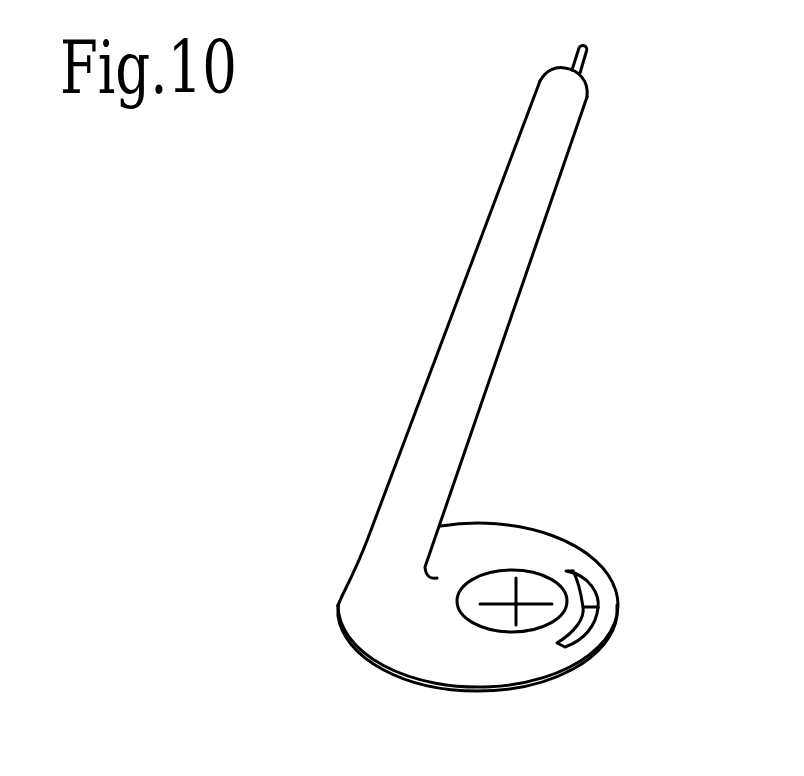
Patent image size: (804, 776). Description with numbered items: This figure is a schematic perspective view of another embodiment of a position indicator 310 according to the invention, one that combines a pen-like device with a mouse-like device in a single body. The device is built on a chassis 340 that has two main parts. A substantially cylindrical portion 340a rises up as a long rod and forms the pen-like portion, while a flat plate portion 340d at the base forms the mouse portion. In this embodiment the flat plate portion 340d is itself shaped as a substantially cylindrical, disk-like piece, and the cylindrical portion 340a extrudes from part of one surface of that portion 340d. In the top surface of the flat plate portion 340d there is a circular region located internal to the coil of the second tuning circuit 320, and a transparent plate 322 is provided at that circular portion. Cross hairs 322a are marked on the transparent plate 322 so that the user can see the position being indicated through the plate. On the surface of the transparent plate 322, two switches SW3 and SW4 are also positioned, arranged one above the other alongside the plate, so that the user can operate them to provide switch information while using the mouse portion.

The operating lever unit 310 is at (527, 398).
The chassis 340 is at (517, 325).
The cylindrical portion 340a is at (556, 194).
The flat plate portion 340d is at (509, 554).
The second tuning circuit 320 is at (488, 661).
The transparent plate 322 is at (490, 613).
The cross hairs 322a is at (539, 607).
The switch SW3 is at (587, 590).
The switch SW4 is at (585, 627).